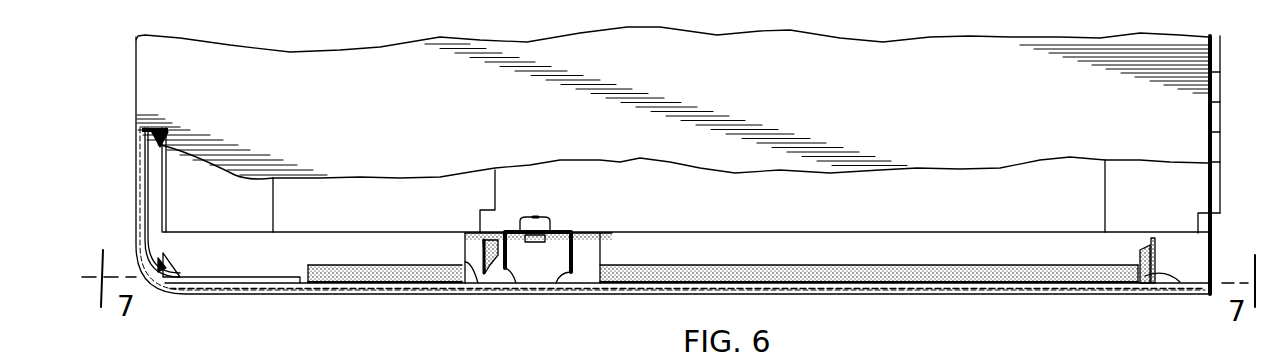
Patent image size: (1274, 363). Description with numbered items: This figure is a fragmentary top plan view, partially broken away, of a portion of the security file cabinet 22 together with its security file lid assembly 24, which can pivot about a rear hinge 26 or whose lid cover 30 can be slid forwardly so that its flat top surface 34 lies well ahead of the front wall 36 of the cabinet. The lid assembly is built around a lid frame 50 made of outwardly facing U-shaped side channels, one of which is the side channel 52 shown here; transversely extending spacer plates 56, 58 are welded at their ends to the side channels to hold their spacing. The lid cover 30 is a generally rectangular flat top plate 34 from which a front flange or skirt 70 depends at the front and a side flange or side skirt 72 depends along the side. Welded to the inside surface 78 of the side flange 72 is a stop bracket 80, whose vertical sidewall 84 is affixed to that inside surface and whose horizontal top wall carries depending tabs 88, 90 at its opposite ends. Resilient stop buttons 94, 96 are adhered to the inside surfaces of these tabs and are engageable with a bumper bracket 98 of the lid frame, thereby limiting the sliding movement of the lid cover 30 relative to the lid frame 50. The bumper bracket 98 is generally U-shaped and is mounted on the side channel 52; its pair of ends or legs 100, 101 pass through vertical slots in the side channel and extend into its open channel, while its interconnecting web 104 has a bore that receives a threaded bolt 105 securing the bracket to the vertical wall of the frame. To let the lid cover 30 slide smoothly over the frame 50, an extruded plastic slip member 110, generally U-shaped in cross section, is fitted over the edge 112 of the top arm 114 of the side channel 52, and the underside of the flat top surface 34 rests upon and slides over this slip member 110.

The security file cabinet 22 is at (130, 173).
The security file lid assembly 24 is at (128, 133).
The rear hinge 26 is at (1221, 118).
The lid cover 30 is at (727, 86).
The flat top surface 34 is at (807, 75).
The front wall 36 is at (160, 147).
The lid frame 50 is at (266, 268).
The side channel 52 is at (811, 232).
The spacer plate 56 is at (394, 214).
The spacer plate 58 is at (1159, 204).
The front flange or skirt 70 is at (136, 98).
The side flange or side skirt 72 is at (445, 288).
The inside surface 78 is at (484, 273).
The stop bracket 80 is at (588, 282).
The vertical sidewall 84 is at (573, 275).
The depending tab 88 is at (466, 262).
The depending tab 90 is at (1172, 293).
The resilient stop button 94 is at (497, 240).
The resilient stop button 96 is at (1140, 257).
The bumper bracket 98 is at (574, 226).
The end or leg of bumper bracket 100 is at (563, 268).
The end or leg of bumper bracket 101 is at (500, 265).
The interconnecting web 104 is at (556, 228).
The threaded bolt 105 is at (533, 216).
The slip member 110 is at (865, 273).
The edge 112 is at (298, 285).
The top arm 114 is at (315, 259).